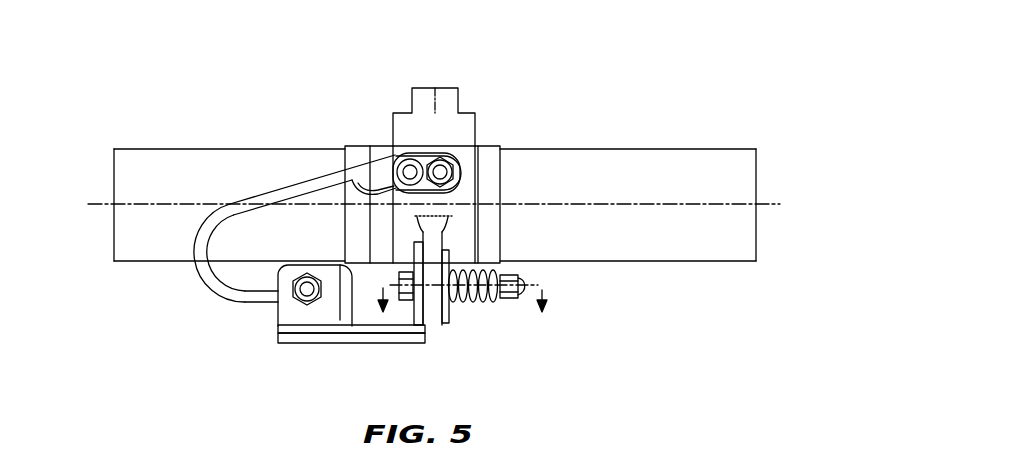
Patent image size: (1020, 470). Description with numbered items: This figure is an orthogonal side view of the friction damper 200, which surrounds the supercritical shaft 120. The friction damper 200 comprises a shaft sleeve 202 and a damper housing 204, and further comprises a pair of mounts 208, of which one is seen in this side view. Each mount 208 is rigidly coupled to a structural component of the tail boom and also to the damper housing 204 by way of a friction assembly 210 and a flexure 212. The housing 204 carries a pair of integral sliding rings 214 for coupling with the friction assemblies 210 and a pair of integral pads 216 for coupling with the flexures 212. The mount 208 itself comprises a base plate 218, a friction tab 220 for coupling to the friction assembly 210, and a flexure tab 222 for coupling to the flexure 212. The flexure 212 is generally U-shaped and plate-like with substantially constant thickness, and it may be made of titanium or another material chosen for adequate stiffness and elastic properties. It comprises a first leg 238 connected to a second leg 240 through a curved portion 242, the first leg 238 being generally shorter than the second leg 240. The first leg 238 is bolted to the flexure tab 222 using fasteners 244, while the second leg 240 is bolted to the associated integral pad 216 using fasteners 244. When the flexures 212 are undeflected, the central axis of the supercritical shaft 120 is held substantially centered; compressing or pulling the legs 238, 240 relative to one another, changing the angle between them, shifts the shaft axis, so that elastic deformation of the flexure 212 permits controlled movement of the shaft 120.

The supercritical shaft 120 is at (644, 149).
The friction damper 200 is at (552, 94).
The shaft sleeve 202 is at (499, 162).
The damper housing 204 is at (463, 112).
The mount 208 is at (358, 343).
The friction assembly 210 is at (465, 320).
The flexure 212 is at (228, 233).
The integral sliding ring 214 is at (433, 323).
The integral pad 216 is at (352, 180).
The base plate 218 is at (375, 333).
The friction tab 220 is at (418, 310).
The flexure tab 222 is at (293, 315).
The first leg 238 is at (250, 296).
The second leg 240 is at (268, 200).
The curved portion 242 is at (193, 270).
The fastener 244 is at (440, 170).